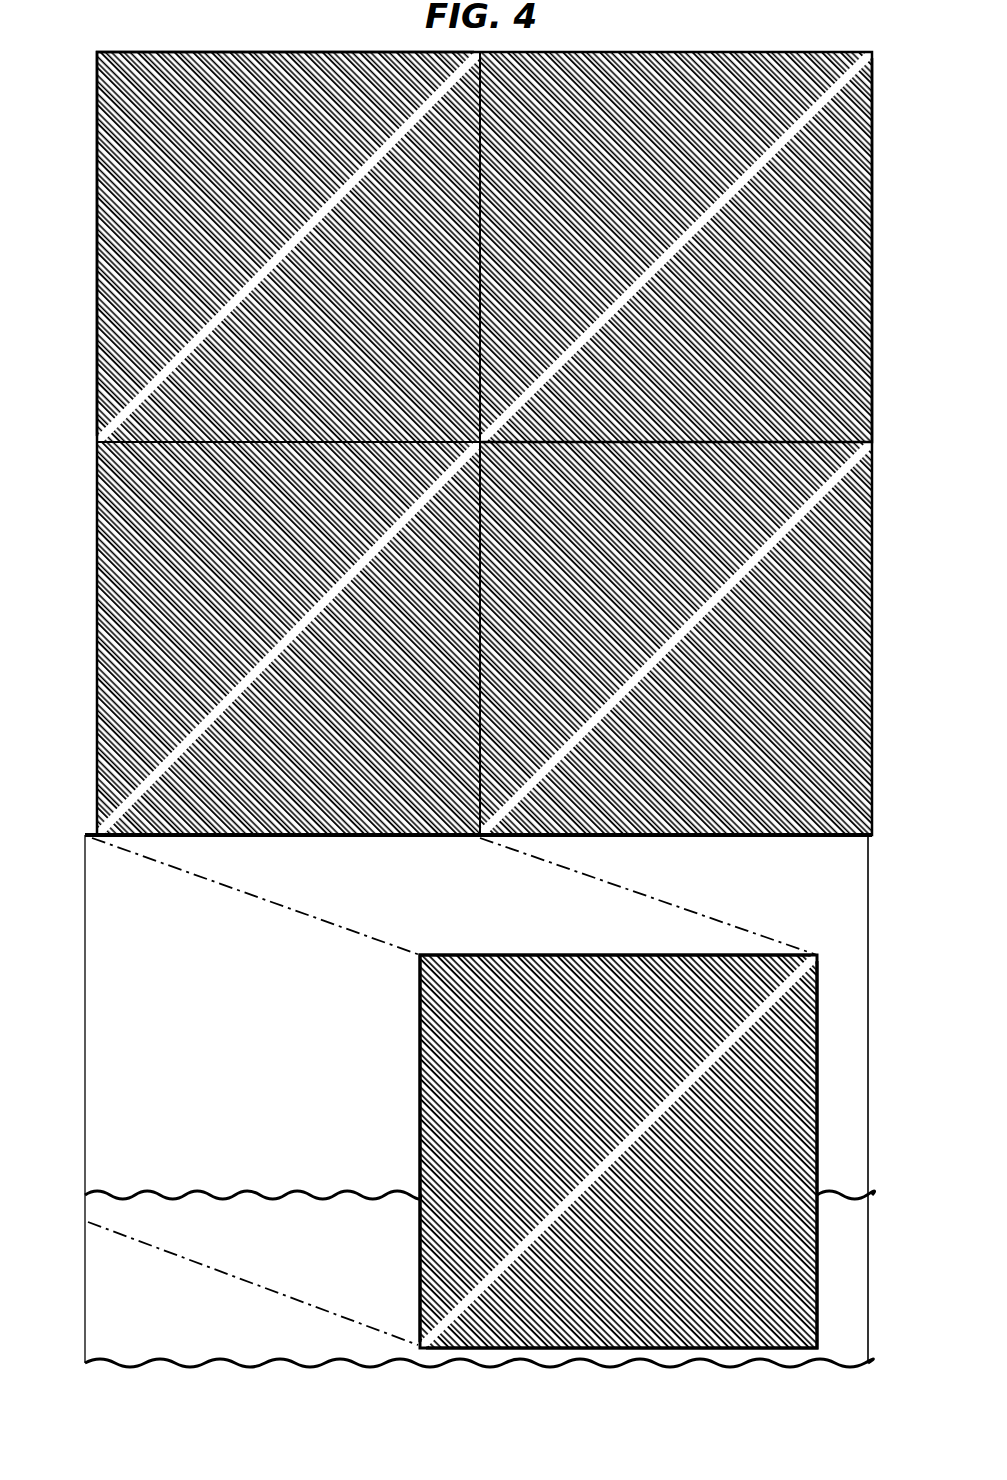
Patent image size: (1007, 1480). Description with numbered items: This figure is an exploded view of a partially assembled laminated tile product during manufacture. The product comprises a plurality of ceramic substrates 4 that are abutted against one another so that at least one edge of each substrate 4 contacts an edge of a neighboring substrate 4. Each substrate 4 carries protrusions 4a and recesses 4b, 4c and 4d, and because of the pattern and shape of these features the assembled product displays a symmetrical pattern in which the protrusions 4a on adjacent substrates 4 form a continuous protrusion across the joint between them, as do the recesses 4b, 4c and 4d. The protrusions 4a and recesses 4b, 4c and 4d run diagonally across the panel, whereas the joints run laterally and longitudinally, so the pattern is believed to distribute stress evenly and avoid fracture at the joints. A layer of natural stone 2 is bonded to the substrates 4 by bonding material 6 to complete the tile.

The ceramic substrate 4 is at (693, 52).
The protrusion 4a is at (130, 286).
The recess 4b is at (130, 318).
The recess 4c is at (122, 80).
The recess 4d is at (843, 83).
The bonding material 6 is at (238, 1046).
The layer of natural stone 2 is at (288, 1265).